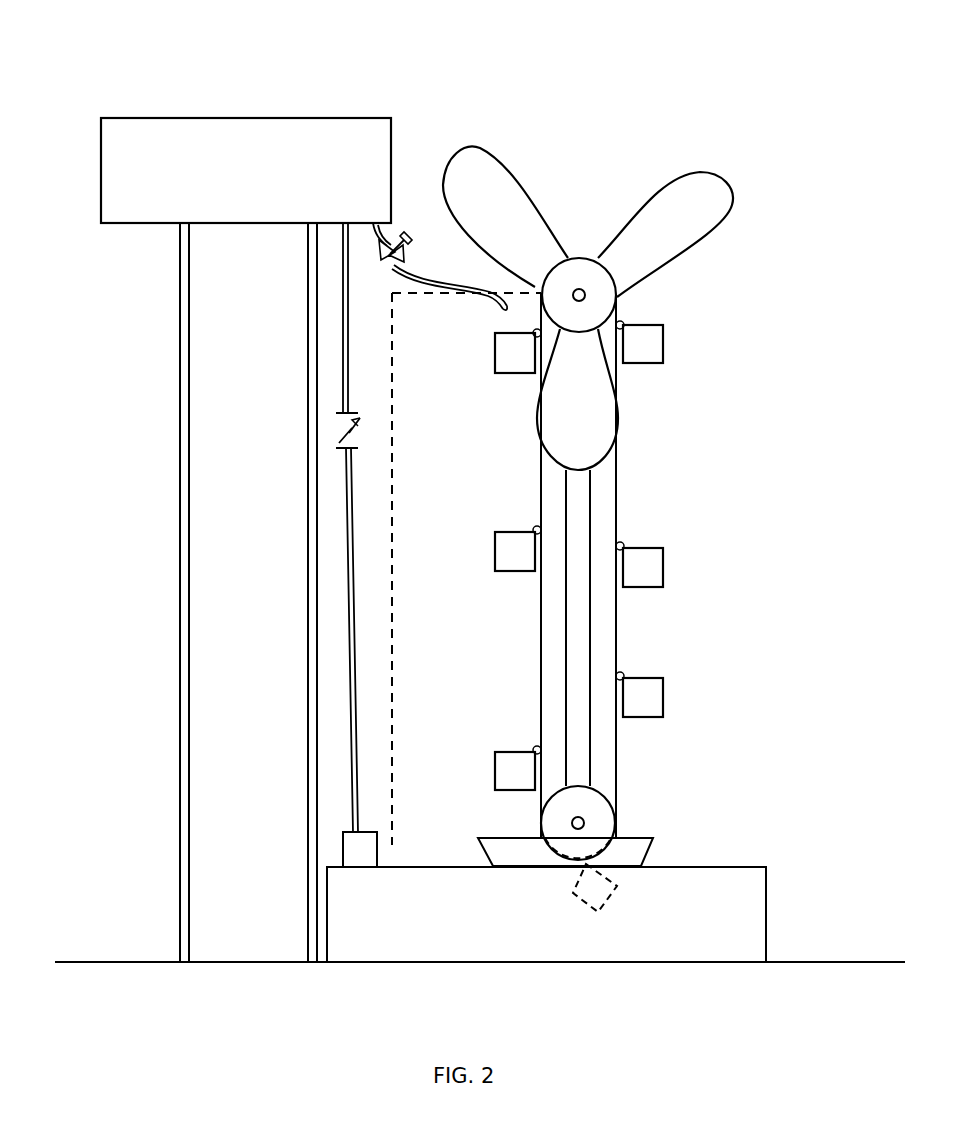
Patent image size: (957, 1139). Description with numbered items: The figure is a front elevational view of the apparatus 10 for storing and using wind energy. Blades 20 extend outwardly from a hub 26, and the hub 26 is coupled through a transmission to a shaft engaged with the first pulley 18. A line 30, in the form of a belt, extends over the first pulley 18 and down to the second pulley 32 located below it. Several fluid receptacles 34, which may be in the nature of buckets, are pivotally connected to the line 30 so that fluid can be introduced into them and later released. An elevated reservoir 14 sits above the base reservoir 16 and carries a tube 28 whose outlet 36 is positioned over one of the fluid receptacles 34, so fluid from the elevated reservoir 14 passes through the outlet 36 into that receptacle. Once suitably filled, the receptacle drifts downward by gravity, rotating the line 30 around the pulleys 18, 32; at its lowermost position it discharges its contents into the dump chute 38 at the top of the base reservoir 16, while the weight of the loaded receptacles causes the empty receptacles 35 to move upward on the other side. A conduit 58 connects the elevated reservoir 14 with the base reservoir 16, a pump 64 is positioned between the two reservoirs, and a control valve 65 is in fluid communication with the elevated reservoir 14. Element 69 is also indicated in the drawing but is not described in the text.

The apparatus 10 is at (697, 83).
The elevated reservoir 14 is at (249, 225).
The base reservoir 16 is at (470, 963).
The first pulley 18 is at (490, 478).
The blades 20 is at (520, 170).
The hub 26 is at (617, 305).
The tube 28 is at (440, 284).
The line 30 is at (618, 502).
The second pulley 32 is at (616, 817).
The fluid receptacles 34 is at (495, 365).
The empty receptacles 35 is at (664, 564).
The outlet 36 is at (500, 307).
The dump chute 38 is at (652, 846).
The conduit 58 is at (355, 576).
The pump 64 is at (378, 850).
The control valve 65 is at (388, 262).
The electrical connection indicator 69 is at (359, 438).